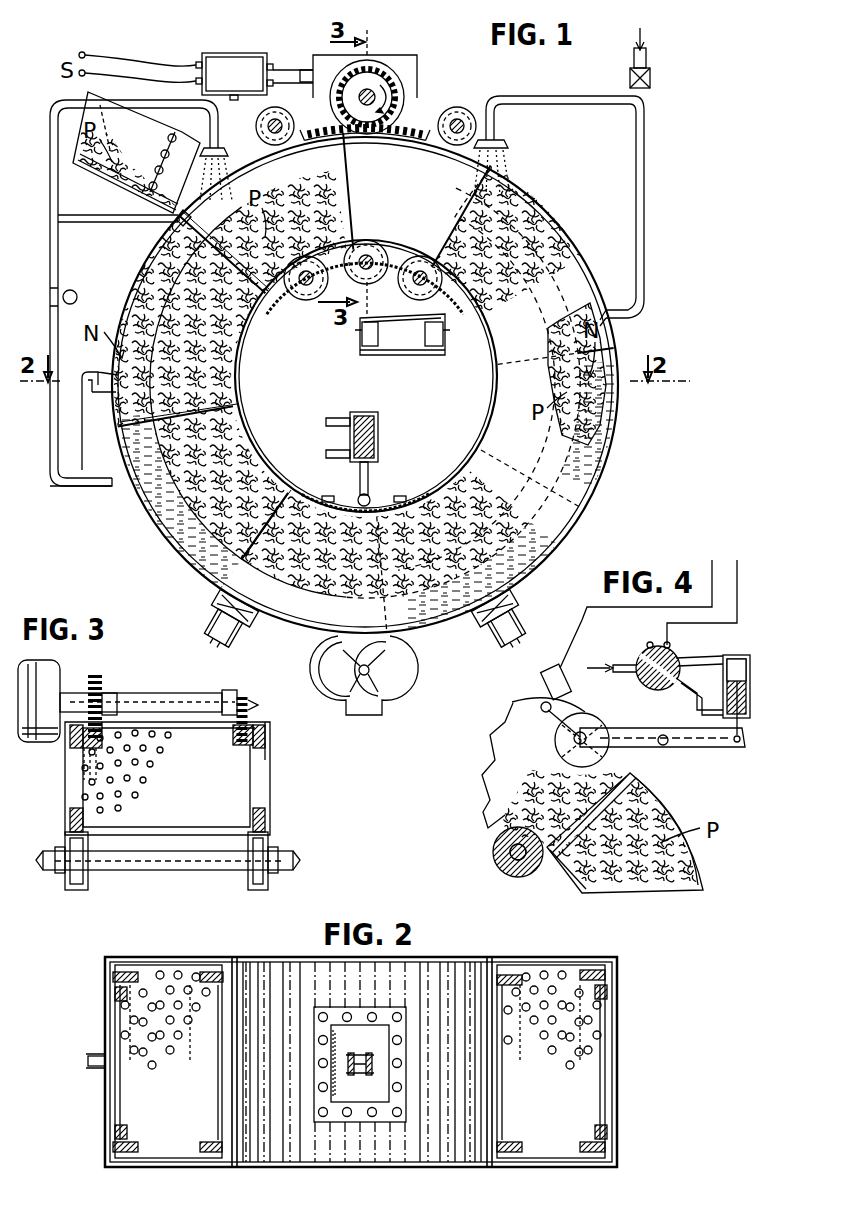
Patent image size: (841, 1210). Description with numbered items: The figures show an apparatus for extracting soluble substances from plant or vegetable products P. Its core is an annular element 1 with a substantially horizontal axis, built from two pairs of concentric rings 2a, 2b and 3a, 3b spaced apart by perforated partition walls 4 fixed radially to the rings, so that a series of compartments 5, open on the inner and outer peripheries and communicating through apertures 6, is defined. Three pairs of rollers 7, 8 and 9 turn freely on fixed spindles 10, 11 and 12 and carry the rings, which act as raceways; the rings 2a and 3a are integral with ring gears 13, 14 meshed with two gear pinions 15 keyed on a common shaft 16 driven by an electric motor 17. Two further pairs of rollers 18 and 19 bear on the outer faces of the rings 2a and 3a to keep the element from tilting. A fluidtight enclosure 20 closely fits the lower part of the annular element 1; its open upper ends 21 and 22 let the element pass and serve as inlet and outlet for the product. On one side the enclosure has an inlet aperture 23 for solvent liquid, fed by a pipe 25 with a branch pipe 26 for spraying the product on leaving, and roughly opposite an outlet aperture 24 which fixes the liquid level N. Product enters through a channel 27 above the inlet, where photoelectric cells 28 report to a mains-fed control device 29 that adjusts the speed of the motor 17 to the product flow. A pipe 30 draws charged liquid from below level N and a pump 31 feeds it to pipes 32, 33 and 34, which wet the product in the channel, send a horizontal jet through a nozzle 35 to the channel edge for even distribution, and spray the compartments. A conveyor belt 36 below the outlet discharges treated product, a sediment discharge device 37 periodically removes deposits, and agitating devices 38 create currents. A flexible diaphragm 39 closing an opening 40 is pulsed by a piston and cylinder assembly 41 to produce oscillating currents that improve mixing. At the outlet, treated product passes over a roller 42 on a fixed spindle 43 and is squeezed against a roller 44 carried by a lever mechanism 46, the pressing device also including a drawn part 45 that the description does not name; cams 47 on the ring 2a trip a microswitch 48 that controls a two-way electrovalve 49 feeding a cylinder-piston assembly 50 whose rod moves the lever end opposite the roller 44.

In FIG. 1, the annular element 1 is at (612, 403).
In FIG. 2, the annular element 1 is at (612, 1024).
In FIG. 3, the concentric ring 2a is at (70, 740).
In FIG. 2, the concentric ring 2a is at (130, 972).
In FIG. 3, the concentric ring 2b is at (70, 816).
In FIG. 2, the concentric ring 2b is at (207, 972).
In FIG. 3, the concentric ring 3a is at (265, 750).
In FIG. 2, the concentric ring 3a is at (113, 1147).
In FIG. 3, the concentric ring 3b is at (263, 812).
In FIG. 2, the concentric ring 3b is at (205, 1146).
In FIG. 1, the perforated partition walls 4 is at (152, 242).
In FIG. 3, the perforated partition walls 4 is at (167, 778).
In FIG. 2, the perforated partition walls 4 is at (360, 1061).
In FIG. 1, the compartments 5 is at (238, 360).
In FIG. 3, the apertures 6 is at (125, 780).
In FIG. 2, the apertures 6 is at (122, 1028).
In FIG. 1, the rollers 7 is at (302, 296).
In FIG. 1, the rollers 8 is at (340, 304).
In FIG. 3, the rollers 8 is at (66, 846).
In FIG. 1, the rollers 9 is at (385, 242).
In FIG. 1, the fixed spindle 10 is at (298, 286).
In FIG. 1, the fixed spindle 11 is at (365, 255).
In FIG. 3, the fixed spindle 11 is at (205, 855).
In FIG. 1, the fixed spindle 12 is at (452, 338).
In FIG. 1, the ring gear 13 is at (418, 127).
In FIG. 3, the ring gear 13 is at (88, 752).
In FIG. 2, the ring gear 13 is at (115, 990).
In FIG. 3, the ring gear 14 is at (246, 748).
In FIG. 2, the ring gear 14 is at (115, 1130).
In FIG. 1, the gear pinions 15 is at (395, 85).
In FIG. 3, the gear pinions 15 is at (103, 679).
In FIG. 1, the common shaft 16 is at (355, 95).
In FIG. 3, the common shaft 16 is at (190, 700).
In FIG. 1, the electric motor 17 is at (345, 60).
In FIG. 3, the electric motor 17 is at (58, 682).
In FIG. 1, the rollers 18 is at (260, 135).
In FIG. 1, the rollers 19 is at (465, 108).
In FIG. 1, the fluidtight enclosure 20 is at (605, 460).
In FIG. 2, the fluidtight enclosure 20 is at (612, 1050).
In FIG. 1, the upper end (inlet aperture) 21 is at (285, 234).
In FIG. 1, the upper end (outlet aperture) 22 is at (462, 221).
In FIG. 1, the inlet aperture for solvent liquid 23 is at (625, 320).
In FIG. 1, the outlet aperture 24 is at (86, 382).
In FIG. 2, the outlet aperture 24 is at (89, 1056).
In FIG. 1, the pipe 25 is at (631, 70).
In FIG. 1, the branch pipe 26 is at (540, 102).
In FIG. 1, the channel 27 is at (105, 95).
In FIG. 1, the photoelectric cells 28 is at (152, 167).
In FIG. 1, the electric control device 29 is at (222, 62).
In FIG. 1, the pipe 30 is at (116, 486).
In FIG. 1, the pump 31 is at (57, 298).
In FIG. 1, the pipe 32 is at (96, 200).
In FIG. 1, the pipe 33 is at (57, 238).
In FIG. 1, the pipe 34 is at (152, 110).
In FIG. 1, the nozzle 35 is at (172, 220).
In FIG. 1, the conveyor belt 36 is at (366, 346).
In FIG. 1, the sediment discharge device 37 is at (400, 692).
In FIG. 1, the agitating devices 38 is at (212, 627).
In FIG. 1, the flexible diaphragm 39 is at (375, 500).
In FIG. 2, the flexible diaphragm 39 is at (372, 1036).
In FIG. 1, the opening 40 is at (325, 498).
In FIG. 1, the piston and cylinder assembly 41 is at (378, 442).
In FIG. 2, the piston and cylinder assembly 41 is at (372, 1066).
In FIG. 4, the roller 42 is at (520, 878).
In FIG. 4, the fixed spindle 43 is at (530, 870).
In FIG. 4, the roller 44 is at (602, 733).
In FIG. 4, the disc 45 is at (576, 748).
In FIG. 4, the lever mechanism 46 is at (690, 748).
In FIG. 4, the cams 47 is at (590, 712).
In FIG. 4, the microswitch 48 is at (568, 688).
In FIG. 4, the two-way electrovalve 49 is at (645, 658).
In FIG. 4, the cylinder-piston assembly 50 is at (723, 672).